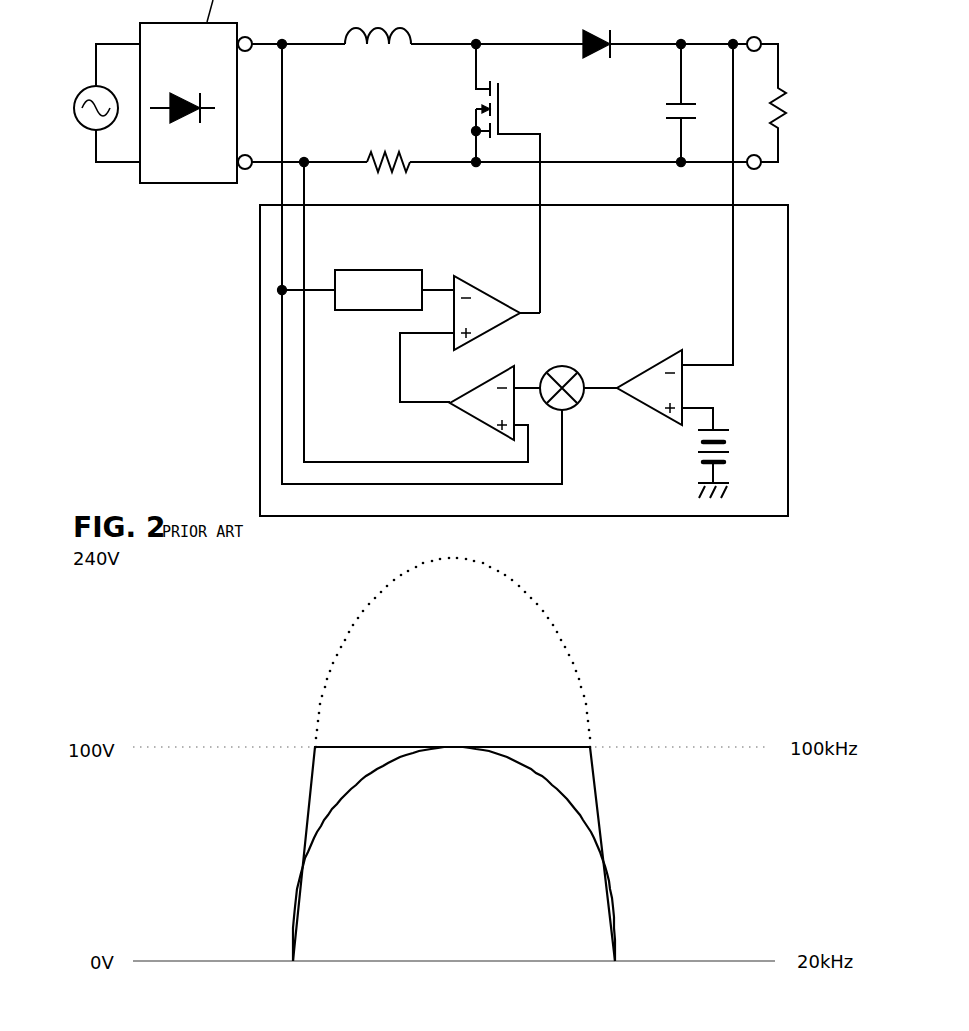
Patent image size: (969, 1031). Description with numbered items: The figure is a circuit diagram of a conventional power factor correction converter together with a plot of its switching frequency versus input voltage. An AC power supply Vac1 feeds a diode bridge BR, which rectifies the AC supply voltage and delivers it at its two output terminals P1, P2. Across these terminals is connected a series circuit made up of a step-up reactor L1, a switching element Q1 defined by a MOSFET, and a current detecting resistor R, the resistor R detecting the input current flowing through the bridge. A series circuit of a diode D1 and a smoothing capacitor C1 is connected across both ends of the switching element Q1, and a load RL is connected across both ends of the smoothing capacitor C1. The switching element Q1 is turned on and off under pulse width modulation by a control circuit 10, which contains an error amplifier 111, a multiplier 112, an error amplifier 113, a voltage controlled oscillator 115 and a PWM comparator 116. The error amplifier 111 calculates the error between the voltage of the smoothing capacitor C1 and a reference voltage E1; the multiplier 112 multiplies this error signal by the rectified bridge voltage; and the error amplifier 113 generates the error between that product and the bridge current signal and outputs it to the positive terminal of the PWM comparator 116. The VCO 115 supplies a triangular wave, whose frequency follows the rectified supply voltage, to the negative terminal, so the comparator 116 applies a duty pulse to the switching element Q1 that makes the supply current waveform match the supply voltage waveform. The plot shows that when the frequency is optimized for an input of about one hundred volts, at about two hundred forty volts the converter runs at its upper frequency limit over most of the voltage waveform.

The control circuit 10 is at (260, 349).
The error amplifier 111 is at (645, 407).
The multiplier 112 is at (563, 363).
The error amplifier 113 is at (468, 423).
The voltage controlled oscillator (VCO) 115 is at (375, 267).
The PWM comparator 116 is at (477, 284).
The bridge rectifier BR is at (188, 103).
The AC power supply Vac1 is at (90, 103).
The input terminal P1 is at (252, 31).
The input terminal P2 is at (252, 150).
The step-up reactor L1 is at (378, 23).
The diode D1 is at (598, 30).
The switching element Q1 is at (490, 178).
The current detecting resistor R is at (388, 149).
The smoothing capacitor C1 is at (665, 103).
The load RL is at (789, 103).
The reference voltage E1 is at (727, 464).